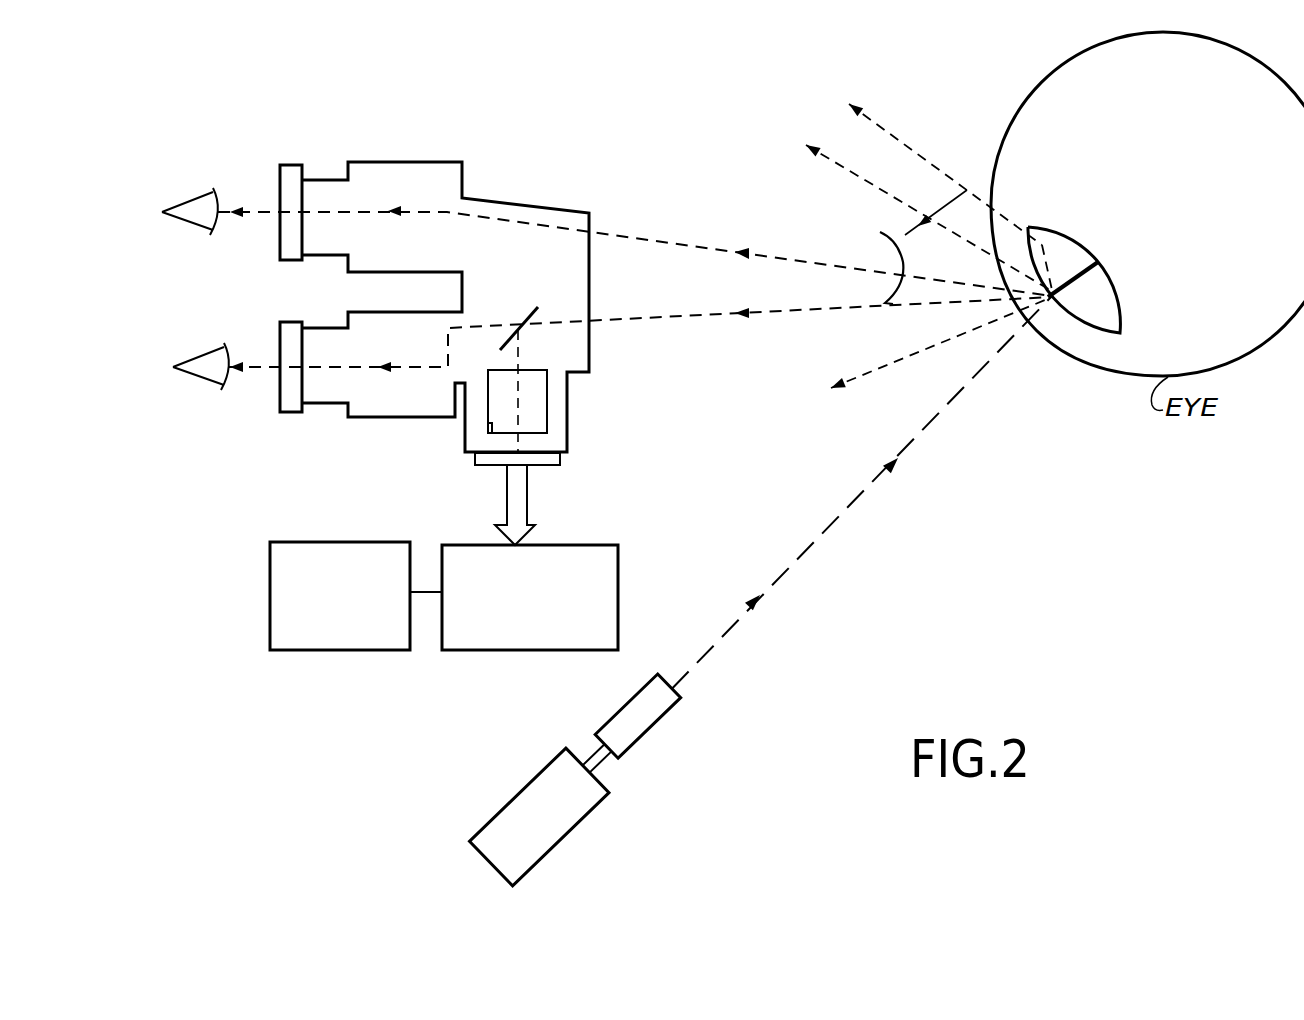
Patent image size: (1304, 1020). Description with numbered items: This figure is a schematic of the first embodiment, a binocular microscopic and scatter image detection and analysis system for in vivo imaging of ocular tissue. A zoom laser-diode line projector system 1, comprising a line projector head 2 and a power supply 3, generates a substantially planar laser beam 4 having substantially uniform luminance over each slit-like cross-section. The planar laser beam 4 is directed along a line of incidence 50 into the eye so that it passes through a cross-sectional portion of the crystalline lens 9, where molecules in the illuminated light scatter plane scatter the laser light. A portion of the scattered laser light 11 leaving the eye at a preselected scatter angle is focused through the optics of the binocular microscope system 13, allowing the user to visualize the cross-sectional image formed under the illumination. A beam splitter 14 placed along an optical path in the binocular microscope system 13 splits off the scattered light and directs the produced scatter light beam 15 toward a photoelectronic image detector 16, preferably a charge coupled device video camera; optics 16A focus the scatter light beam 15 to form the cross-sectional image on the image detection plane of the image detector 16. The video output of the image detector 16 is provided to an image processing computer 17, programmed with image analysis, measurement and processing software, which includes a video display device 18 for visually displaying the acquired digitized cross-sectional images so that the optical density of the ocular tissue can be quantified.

The zoom laser-diode line projector system 1 is at (562, 780).
The line projector head 2 is at (652, 747).
The power supply 3 is at (565, 837).
The planar laser beam 4 is at (848, 505).
The crystalline lens 9 is at (1099, 325).
The scattered laser light 11 is at (905, 246).
The binocular microscope system 13 is at (464, 172).
The beam splitter 14 is at (538, 312).
The scatter light beam 15 is at (520, 393).
The photoelectronic image detector 16 is at (562, 462).
The optics 16A is at (492, 423).
The image processing computer 17 is at (598, 545).
The video display device 18 is at (310, 542).
The line of incidence 50 is at (1075, 285).